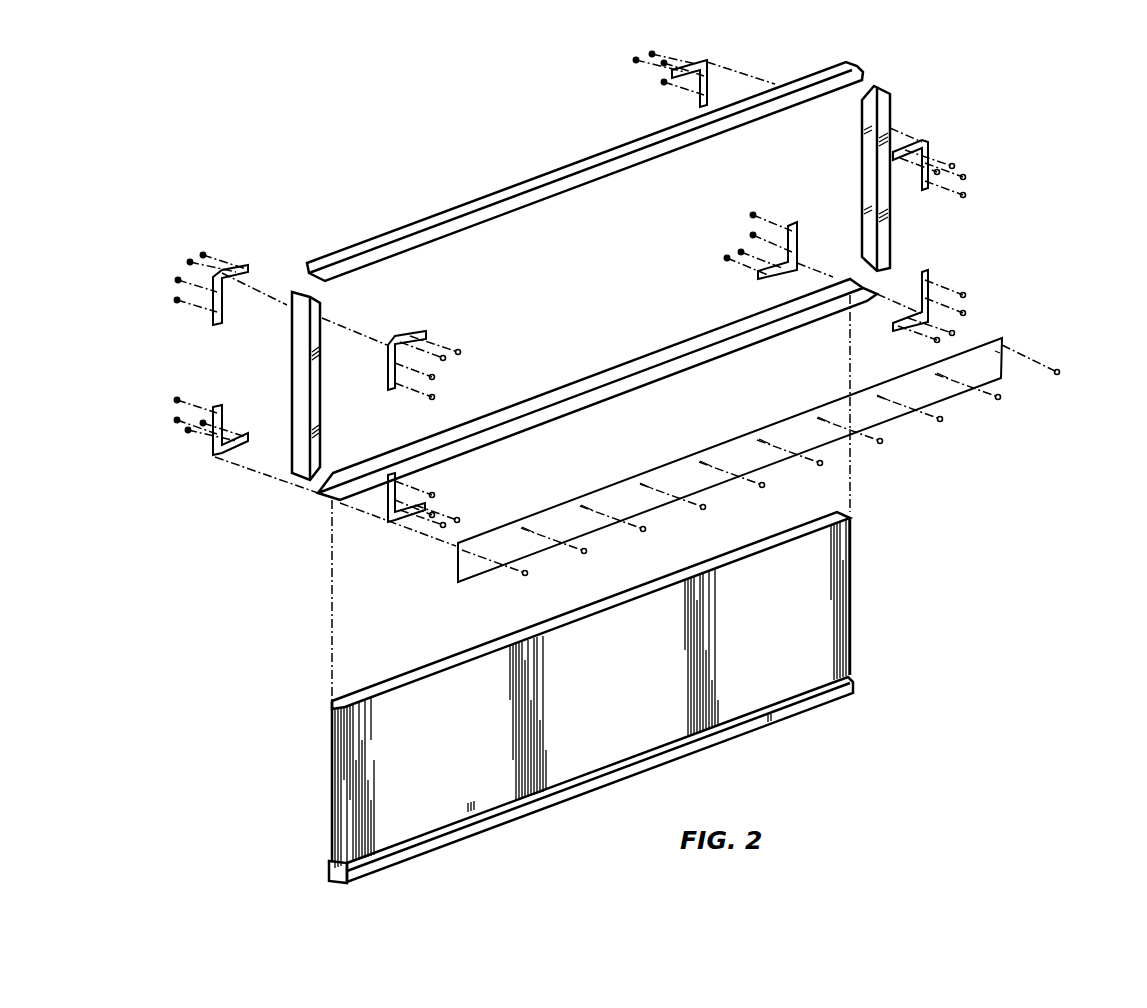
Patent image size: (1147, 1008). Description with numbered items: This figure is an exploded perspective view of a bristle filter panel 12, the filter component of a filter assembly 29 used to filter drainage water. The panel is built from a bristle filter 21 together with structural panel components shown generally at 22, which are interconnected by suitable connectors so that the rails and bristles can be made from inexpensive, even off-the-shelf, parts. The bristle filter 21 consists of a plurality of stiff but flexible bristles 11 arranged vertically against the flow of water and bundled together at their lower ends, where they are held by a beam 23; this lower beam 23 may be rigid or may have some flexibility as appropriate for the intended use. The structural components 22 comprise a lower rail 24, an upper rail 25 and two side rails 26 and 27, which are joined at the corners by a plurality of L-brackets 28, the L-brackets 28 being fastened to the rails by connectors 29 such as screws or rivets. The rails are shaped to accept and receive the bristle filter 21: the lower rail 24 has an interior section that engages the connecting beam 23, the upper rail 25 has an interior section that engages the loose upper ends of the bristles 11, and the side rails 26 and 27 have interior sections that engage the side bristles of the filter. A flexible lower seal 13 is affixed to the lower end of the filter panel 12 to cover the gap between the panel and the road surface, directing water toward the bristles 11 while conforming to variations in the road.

The bristles 11 is at (386, 775).
The bristle filter panel 12 is at (298, 649).
The lower seal 13 is at (558, 516).
The bristle filter 21 is at (865, 626).
The structural panel components 22 is at (450, 205).
The beam 23 is at (756, 735).
The lower rail 24 is at (630, 373).
The upper rail 25 is at (580, 167).
The side rail 26 is at (306, 399).
The side rail 27 is at (876, 187).
The L-brackets 28 is at (707, 71).
The connectors 29 is at (972, 200).